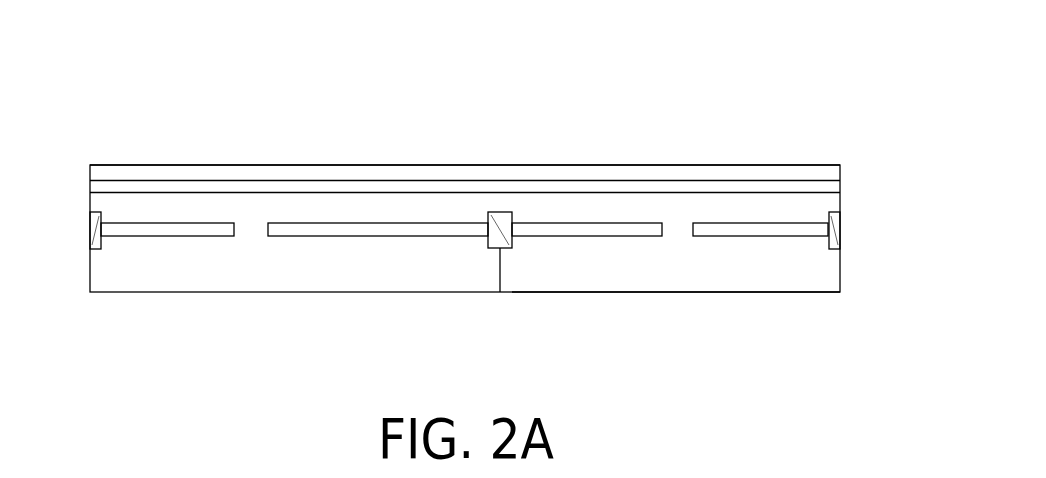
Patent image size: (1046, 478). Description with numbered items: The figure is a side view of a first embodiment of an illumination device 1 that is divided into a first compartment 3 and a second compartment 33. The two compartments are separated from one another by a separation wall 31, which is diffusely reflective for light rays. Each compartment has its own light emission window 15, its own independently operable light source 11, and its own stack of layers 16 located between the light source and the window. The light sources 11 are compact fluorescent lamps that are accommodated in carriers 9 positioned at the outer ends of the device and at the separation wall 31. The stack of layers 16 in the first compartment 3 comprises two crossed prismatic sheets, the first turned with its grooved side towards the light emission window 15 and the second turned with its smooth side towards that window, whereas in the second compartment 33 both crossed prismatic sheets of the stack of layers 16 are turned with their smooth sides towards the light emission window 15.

The illumination device 1 is at (775, 131).
The first compartment 3 is at (224, 267).
The carrier 9 is at (508, 212).
The light source 11 is at (282, 228).
The light emission window 15 is at (380, 165).
The stack of layers 16 is at (87, 164).
The separation wall 31 is at (500, 267).
The second compartment 33 is at (653, 267).